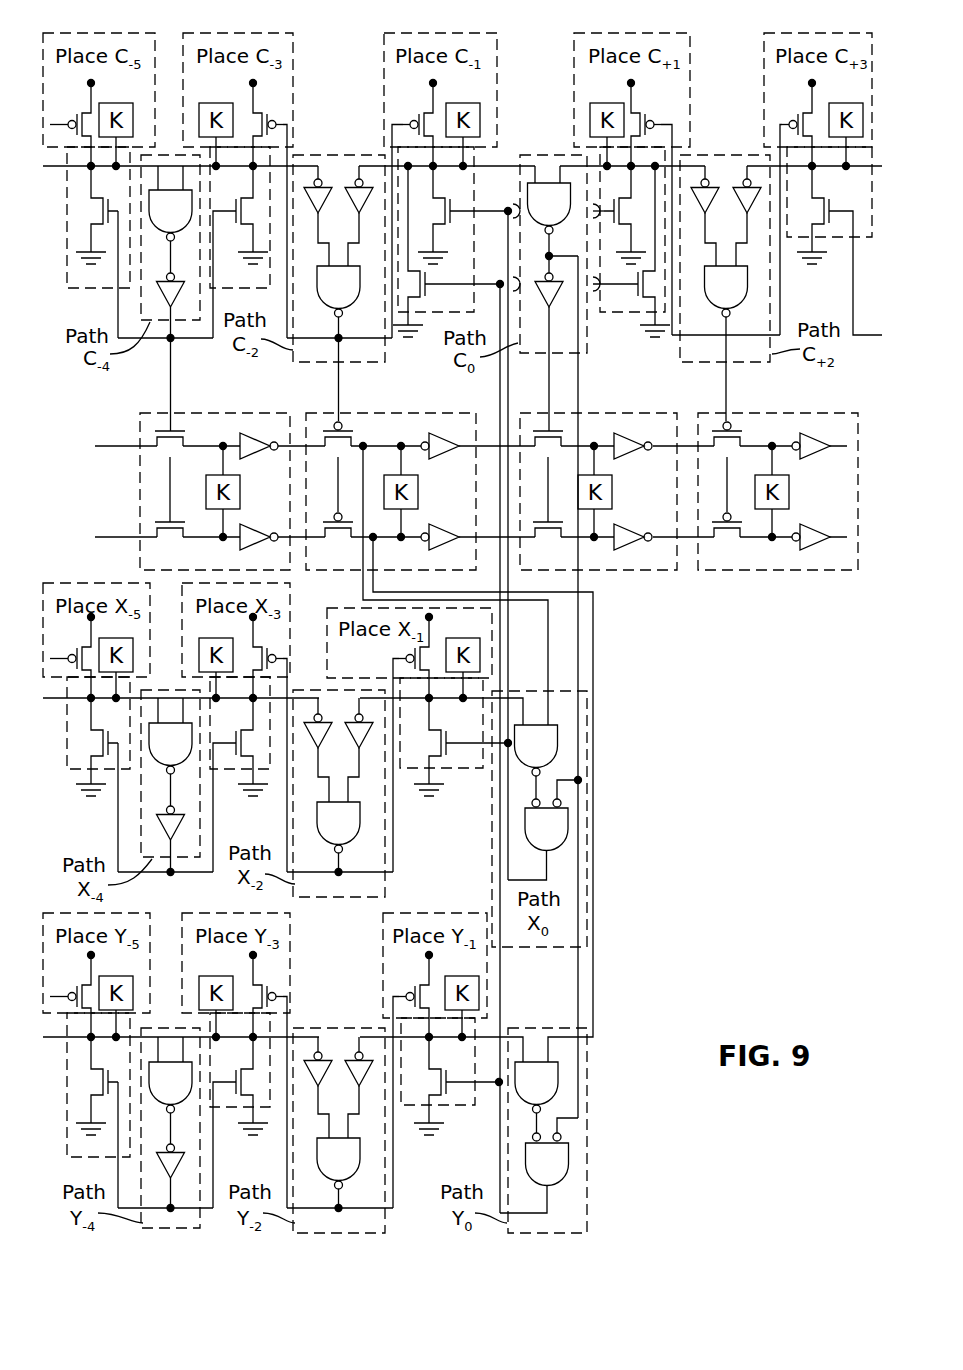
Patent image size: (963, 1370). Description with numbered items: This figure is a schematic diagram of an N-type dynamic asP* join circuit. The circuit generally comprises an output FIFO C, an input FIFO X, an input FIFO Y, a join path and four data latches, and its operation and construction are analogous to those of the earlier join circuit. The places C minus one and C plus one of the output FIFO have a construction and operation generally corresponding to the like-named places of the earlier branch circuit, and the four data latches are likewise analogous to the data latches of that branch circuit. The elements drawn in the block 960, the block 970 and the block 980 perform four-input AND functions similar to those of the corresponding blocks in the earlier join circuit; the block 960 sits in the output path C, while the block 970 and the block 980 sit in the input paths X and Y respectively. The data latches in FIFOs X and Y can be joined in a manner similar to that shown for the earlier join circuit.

The block 960 is at (558, 354).
The block 970 is at (588, 718).
The block 980 is at (587, 1188).